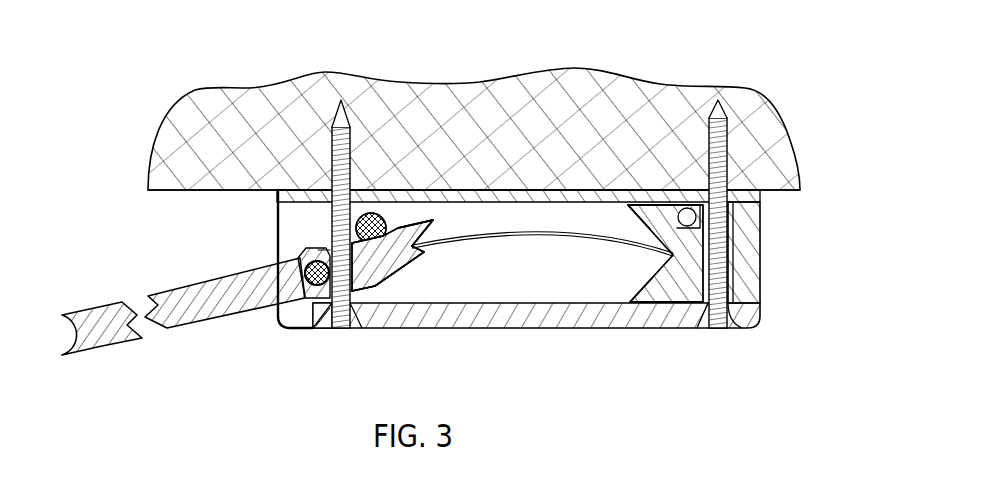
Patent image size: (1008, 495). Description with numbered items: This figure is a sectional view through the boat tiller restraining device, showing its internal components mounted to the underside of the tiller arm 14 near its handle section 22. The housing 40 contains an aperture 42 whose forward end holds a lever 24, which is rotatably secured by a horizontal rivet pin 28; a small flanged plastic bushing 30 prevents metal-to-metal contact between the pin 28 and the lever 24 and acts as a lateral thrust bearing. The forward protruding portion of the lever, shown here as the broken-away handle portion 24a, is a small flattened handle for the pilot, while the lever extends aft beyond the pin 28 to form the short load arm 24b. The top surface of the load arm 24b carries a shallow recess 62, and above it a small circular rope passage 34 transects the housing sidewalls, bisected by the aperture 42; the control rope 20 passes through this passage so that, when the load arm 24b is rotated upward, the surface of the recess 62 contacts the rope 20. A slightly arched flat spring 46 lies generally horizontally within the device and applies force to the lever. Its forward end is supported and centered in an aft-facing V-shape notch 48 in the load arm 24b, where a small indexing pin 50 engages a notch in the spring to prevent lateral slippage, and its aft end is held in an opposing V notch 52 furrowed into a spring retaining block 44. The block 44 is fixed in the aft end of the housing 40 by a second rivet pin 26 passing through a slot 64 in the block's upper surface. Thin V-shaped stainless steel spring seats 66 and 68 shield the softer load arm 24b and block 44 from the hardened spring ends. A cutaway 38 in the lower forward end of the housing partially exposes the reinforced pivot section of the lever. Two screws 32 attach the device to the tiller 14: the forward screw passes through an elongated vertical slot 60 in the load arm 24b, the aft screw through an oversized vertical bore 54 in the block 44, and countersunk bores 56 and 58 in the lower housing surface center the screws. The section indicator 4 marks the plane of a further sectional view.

The tiller arm 14 is at (636, 72).
The control rope 20 is at (377, 212).
The handle section 22 is at (170, 192).
The lever 24 is at (207, 322).
The lever handle end 24a is at (102, 303).
The load arm 24b is at (420, 275).
The second rivet pin 26 is at (676, 213).
The rivet pin 28 is at (290, 258).
The flanged plastic bushing 30 is at (296, 262).
The screws 32 is at (332, 331).
The rope passage 34 is at (385, 225).
The cutaway 38 is at (289, 320).
The housing 40 is at (560, 328).
The aperture 42 is at (275, 210).
The spring retaining block 44 is at (757, 230).
The flat spring 46 is at (537, 238).
The V-shape notch 48 is at (414, 247).
The indexing pin 50 is at (430, 238).
The opposing V notch 52 is at (668, 256).
The oversized vertical bore 54 is at (321, 252).
The countersunk bore 56 is at (707, 307).
The countersunk bore 58 is at (317, 327).
The vertical slot 60 is at (376, 287).
The shallow recess 62 is at (376, 248).
The slot 64 is at (636, 213).
The spring seat 66 is at (424, 253).
The spring seat 68 is at (638, 288).
The section line 4- 4 is at (402, 373).